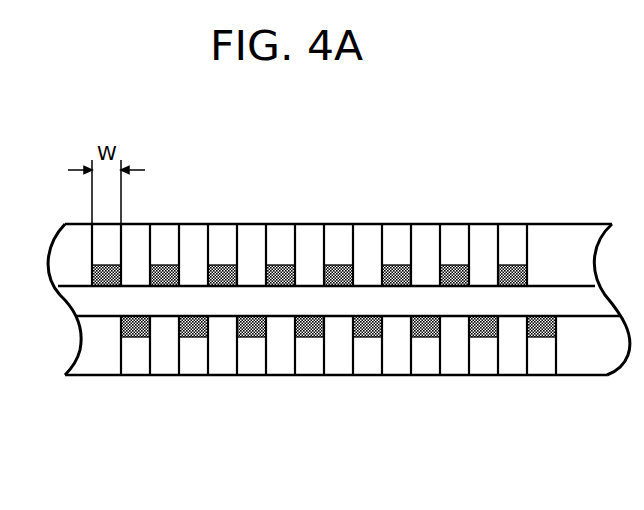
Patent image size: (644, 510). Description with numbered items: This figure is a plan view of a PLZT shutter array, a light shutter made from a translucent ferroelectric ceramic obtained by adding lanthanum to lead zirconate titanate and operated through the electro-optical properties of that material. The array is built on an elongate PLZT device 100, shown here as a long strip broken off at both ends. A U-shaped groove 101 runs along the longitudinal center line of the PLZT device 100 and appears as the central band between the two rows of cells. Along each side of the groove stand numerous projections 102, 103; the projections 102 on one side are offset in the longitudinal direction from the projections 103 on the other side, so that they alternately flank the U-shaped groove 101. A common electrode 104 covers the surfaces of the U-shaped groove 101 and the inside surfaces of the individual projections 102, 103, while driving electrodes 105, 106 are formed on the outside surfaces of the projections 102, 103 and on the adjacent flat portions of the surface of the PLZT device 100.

The PLZT device 100 is at (578, 236).
The U-shaped groove 101 is at (576, 308).
The projections 102 is at (167, 265).
The projections 103 is at (137, 327).
The common electrode 104 is at (427, 293).
The driving electrode 105 is at (337, 237).
The driving electrode 106 is at (250, 363).